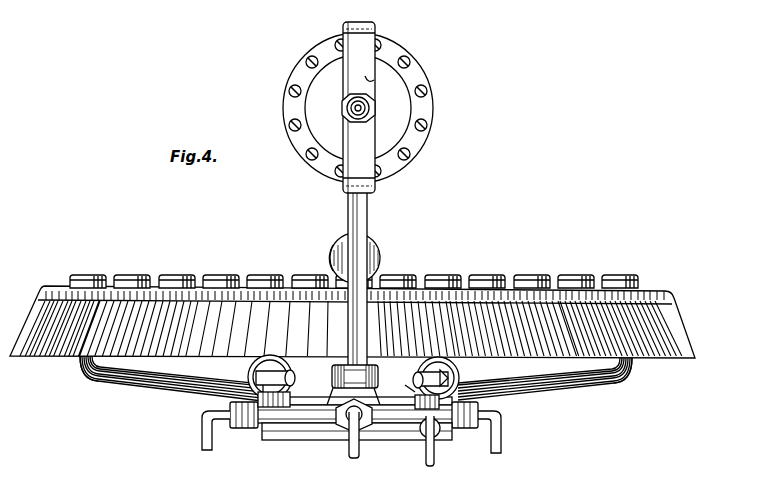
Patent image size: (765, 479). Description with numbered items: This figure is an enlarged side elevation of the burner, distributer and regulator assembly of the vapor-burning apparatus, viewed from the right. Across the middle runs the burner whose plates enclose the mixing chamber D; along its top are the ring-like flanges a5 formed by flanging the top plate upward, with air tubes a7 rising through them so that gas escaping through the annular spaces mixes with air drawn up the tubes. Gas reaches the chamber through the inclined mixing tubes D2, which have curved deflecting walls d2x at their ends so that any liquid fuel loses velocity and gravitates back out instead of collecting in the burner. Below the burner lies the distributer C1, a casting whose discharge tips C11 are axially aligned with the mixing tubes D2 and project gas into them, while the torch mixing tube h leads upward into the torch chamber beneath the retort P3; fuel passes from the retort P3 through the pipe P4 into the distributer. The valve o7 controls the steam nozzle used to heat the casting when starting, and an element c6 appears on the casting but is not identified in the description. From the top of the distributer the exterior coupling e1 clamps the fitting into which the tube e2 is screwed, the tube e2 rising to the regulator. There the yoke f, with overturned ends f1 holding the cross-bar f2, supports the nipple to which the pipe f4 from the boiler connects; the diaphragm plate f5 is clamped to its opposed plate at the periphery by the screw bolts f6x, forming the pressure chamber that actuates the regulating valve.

The mixing chamber D is at (353, 322).
The ring-like flanges a5 is at (106, 276).
The air tubes a7 is at (214, 276).
The mixing tubes D2 is at (163, 388).
The curved deflecting walls d2x is at (83, 368).
The exterior coupling e1 is at (357, 389).
The pivot pin c6 is at (341, 448).
The valve o7 is at (436, 461).
The discharge tips C11 is at (353, 382).
The torch mixing tube h is at (395, 376).
The retort P3 is at (378, 257).
The pipe P4 is at (332, 259).
The tube e2 is at (367, 226).
The distributer C1 is at (348, 376).
The diaphragm plate f5 is at (400, 116).
The screw bolts f6x is at (406, 56).
The yoke f is at (356, 22).
The overturned ends f1 is at (366, 33).
The cross-bar f2 is at (377, 81).
The pipe f4 is at (366, 108).